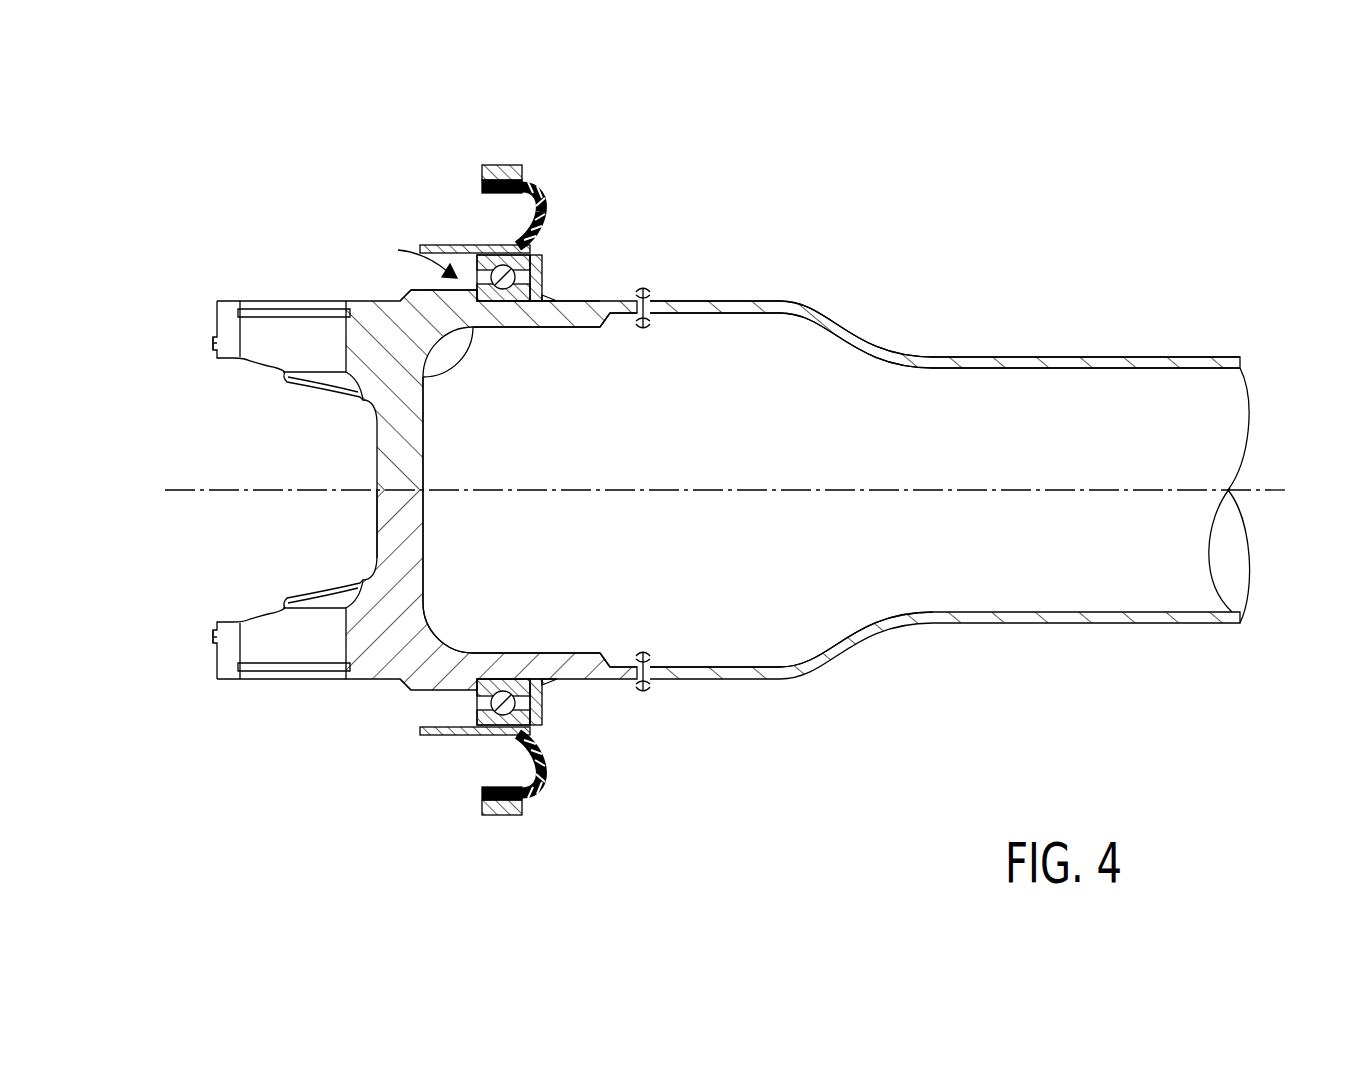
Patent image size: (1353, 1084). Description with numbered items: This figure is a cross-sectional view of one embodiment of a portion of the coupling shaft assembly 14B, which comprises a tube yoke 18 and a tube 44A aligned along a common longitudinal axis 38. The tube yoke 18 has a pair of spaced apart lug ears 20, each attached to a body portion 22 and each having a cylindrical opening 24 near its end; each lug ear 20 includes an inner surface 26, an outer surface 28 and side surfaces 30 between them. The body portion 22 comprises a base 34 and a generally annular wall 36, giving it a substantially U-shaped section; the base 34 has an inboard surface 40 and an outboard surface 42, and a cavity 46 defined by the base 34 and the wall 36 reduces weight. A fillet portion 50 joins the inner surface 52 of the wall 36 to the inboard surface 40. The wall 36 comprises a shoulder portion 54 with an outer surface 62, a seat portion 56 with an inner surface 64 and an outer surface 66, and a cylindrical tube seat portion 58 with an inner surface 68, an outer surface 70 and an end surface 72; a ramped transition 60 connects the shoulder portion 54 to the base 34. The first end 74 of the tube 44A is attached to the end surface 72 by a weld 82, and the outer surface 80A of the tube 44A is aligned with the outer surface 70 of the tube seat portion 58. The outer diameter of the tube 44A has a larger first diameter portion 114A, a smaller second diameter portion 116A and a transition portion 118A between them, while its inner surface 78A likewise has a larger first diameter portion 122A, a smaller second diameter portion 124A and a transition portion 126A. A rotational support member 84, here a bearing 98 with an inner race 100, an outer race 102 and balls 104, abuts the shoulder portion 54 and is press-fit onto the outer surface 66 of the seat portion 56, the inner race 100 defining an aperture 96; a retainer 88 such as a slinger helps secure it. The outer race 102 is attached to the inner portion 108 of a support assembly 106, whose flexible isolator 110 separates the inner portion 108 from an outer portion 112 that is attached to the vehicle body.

The coupling shaft assembly 14B is at (206, 124).
The tube yoke 18 is at (373, 682).
The lug ears 20 is at (213, 340).
The body portion 22 is at (423, 436).
The cylindrical opening 24 is at (256, 300).
The inner surface 26 is at (324, 392).
The outer surface 28 is at (350, 300).
The side surface 30 is at (216, 323).
The base 34 is at (423, 513).
The wall 36 is at (487, 653).
The longitudinal axis 38 is at (1260, 490).
The inboard surface 40 is at (425, 548).
The outboard surface 42 is at (377, 505).
The tube 44A is at (1145, 356).
The cavity 46 is at (584, 443).
The fillet portion 50 is at (440, 347).
The inner surface 52 is at (490, 328).
The shoulder portion 54 is at (400, 300).
The seat portion 56 is at (530, 314).
The tube seat portion 58 is at (597, 328).
The ramped transition 60 is at (400, 692).
The outer surface 62 is at (417, 289).
The inner surface 64 is at (533, 653).
The outer surface 66 is at (542, 712).
The inner surface 68 is at (567, 653).
The outer surface 70 is at (602, 680).
The end surface 72 is at (652, 660).
The first end 74 is at (650, 688).
The inner surface 78A is at (737, 670).
The outer surface 80A is at (783, 670).
The weld 82 is at (643, 680).
The rotational support member 84 is at (430, 289).
The retainer 88 is at (535, 727).
The aperture 96 is at (477, 703).
The bearing 98 is at (514, 272).
The inner race 100 is at (547, 298).
The outer race 102 is at (527, 257).
The balls 104 is at (535, 278).
The support assembly 106 is at (541, 182).
The inner portion 108 is at (433, 244).
The isolator 110 is at (523, 232).
The outer portion 112 is at (495, 165).
The first diameter portion 114A is at (780, 302).
The second diameter portion 116A is at (1003, 356).
The transition portion 118A is at (855, 330).
The first diameter portion 122A is at (780, 315).
The second diameter portion 124A is at (1000, 369).
The transition portion 126A is at (858, 346).